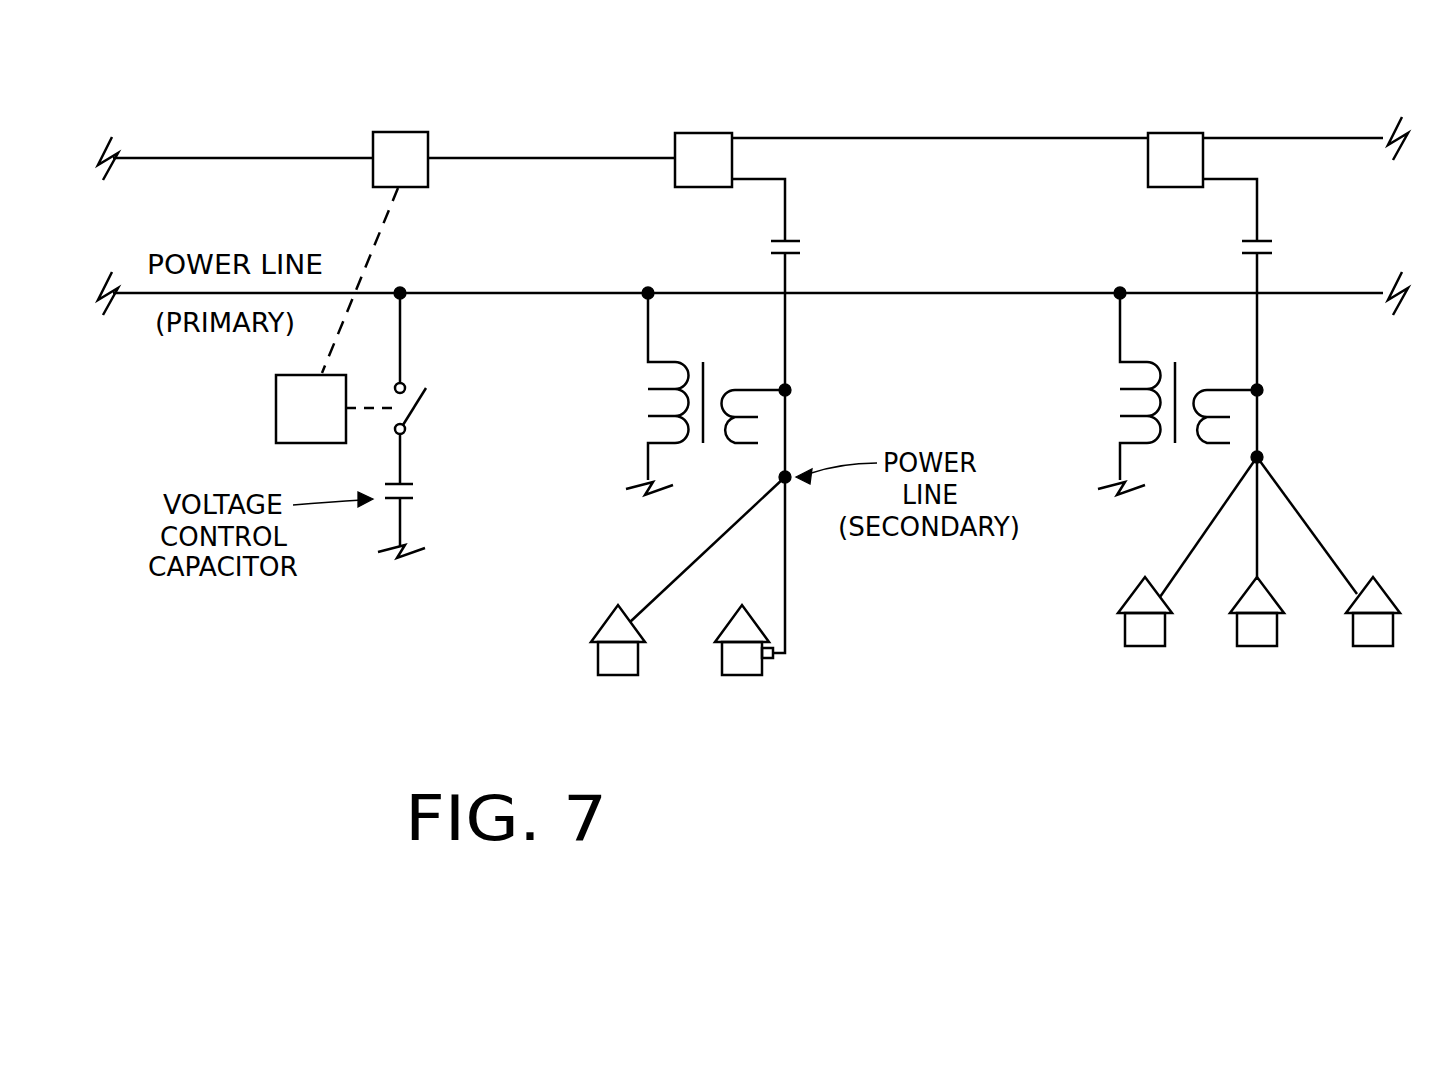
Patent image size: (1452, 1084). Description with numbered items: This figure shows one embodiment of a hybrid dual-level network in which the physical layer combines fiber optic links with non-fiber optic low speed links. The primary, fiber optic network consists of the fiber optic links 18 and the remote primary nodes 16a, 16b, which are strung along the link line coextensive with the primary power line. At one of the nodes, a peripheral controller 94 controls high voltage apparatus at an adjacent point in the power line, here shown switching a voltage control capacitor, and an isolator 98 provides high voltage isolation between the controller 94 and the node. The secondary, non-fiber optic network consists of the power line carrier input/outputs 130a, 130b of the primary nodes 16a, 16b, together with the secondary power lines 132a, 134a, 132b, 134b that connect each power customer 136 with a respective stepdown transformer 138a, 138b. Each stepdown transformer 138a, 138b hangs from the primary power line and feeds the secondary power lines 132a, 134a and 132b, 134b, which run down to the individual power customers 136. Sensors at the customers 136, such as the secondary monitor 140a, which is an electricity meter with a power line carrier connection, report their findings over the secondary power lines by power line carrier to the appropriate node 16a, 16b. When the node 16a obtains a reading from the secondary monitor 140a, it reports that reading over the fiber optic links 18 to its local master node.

The fiber optic link 18 is at (558, 158).
The isolator 98 is at (375, 242).
The primary node 16a is at (699, 132).
The primary node 16b is at (1170, 132).
The peripheral controller 94 is at (276, 430).
The stepdown transformer 138a is at (712, 388).
The stepdown transformer 138b is at (1183, 388).
The power line carrier input/output 130a is at (785, 358).
The power line carrier input/output 130b is at (1257, 358).
The secondary power line 132a is at (693, 565).
The secondary power line 132b is at (785, 580).
The secondary power line 134a is at (1293, 500).
The secondary power line 134b is at (1259, 548).
The power customer 136 is at (598, 668).
The secondary monitor 140a is at (780, 648).